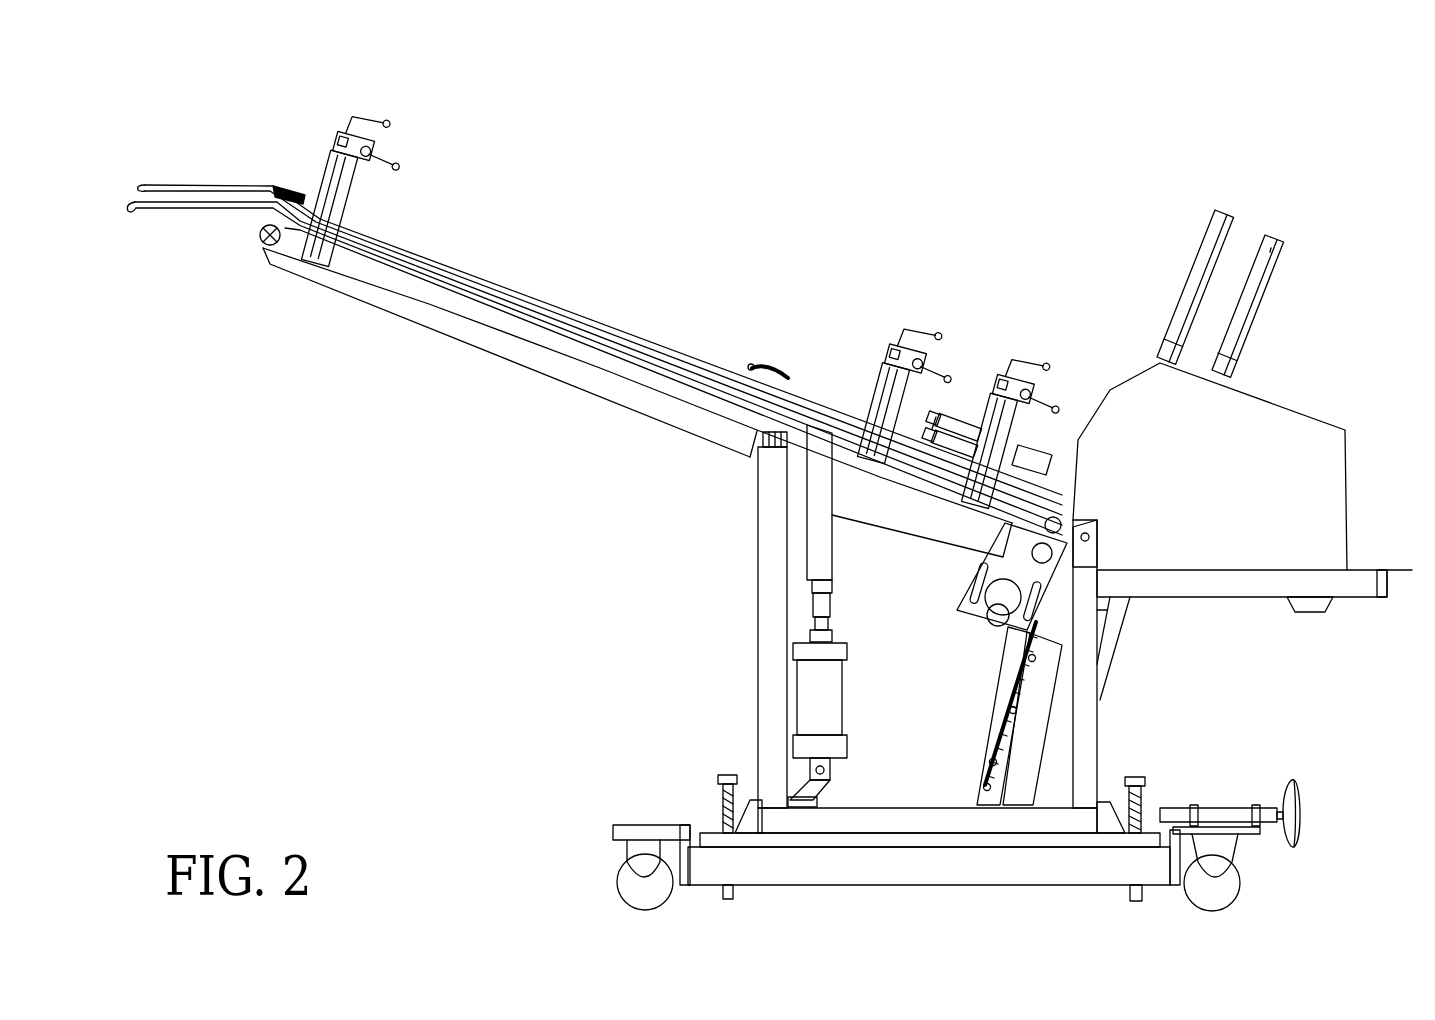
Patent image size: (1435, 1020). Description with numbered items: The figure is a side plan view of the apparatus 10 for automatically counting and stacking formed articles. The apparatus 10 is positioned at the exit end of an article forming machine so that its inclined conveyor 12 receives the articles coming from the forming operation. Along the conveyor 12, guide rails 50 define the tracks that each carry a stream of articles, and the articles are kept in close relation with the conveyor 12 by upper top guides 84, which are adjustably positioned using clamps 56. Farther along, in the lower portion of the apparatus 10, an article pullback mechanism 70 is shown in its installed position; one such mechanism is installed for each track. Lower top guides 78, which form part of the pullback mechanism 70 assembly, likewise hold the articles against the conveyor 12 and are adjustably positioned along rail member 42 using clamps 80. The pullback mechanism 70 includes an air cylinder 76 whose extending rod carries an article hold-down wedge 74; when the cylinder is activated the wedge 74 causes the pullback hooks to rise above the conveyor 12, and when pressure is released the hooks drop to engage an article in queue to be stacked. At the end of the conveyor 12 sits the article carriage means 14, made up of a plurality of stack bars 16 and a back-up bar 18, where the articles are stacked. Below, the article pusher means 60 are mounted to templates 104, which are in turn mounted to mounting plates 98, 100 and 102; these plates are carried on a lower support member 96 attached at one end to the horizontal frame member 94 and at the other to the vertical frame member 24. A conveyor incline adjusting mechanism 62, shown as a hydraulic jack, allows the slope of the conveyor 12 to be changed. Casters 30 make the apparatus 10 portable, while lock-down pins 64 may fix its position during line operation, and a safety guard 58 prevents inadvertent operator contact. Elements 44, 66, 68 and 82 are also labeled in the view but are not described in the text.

The apparatus 10 is at (706, 523).
The conveyor 12 is at (428, 268).
The article carriage means 14 is at (1242, 380).
The stack bars 16 is at (1220, 210).
The back-up bar 18 is at (1277, 275).
The vertical frame member 24 is at (1098, 707).
The casters 30 is at (613, 890).
The rail member 42 is at (877, 380).
The clamp 44 is at (987, 428).
The guide rails 50 is at (137, 215).
The clamps 56 is at (344, 117).
The safety guard 58 is at (1257, 503).
The article pusher means 60 is at (1120, 630).
The conveyor incline adjusting mechanism 62 is at (847, 633).
The lock-down pins 64 is at (717, 777).
The handle 66 is at (1295, 780).
The roller 68 is at (262, 238).
The article pullback mechanism 70 is at (972, 388).
The article hold-down wedge 74 is at (1047, 450).
The air cylinder 76 is at (960, 413).
The lower top guides 78 is at (786, 370).
The clamps 80 is at (887, 333).
The clamp handle 82 is at (1037, 390).
The upper top guides 84 is at (152, 183).
The horizontal frame member 94 is at (852, 807).
The lower support member 96 is at (977, 800).
The mounting plate 98 is at (1020, 647).
The mounting plate 100 is at (997, 717).
The mounting plate 102 is at (983, 750).
The templates 104 is at (998, 713).